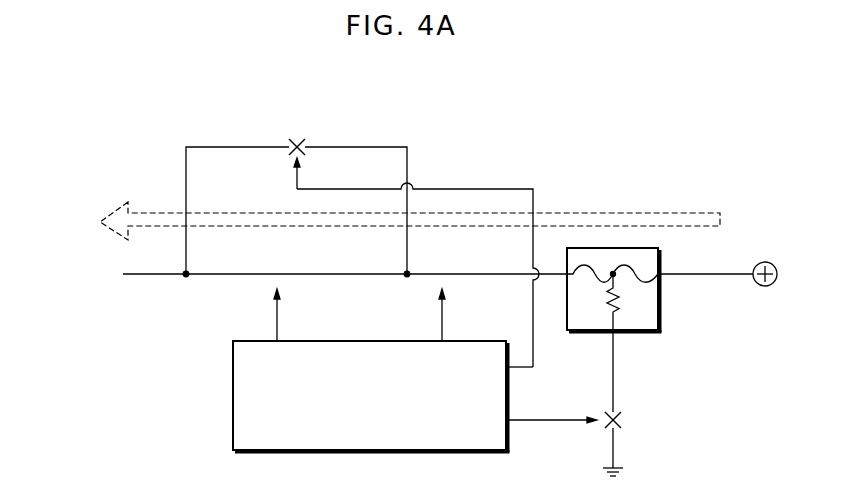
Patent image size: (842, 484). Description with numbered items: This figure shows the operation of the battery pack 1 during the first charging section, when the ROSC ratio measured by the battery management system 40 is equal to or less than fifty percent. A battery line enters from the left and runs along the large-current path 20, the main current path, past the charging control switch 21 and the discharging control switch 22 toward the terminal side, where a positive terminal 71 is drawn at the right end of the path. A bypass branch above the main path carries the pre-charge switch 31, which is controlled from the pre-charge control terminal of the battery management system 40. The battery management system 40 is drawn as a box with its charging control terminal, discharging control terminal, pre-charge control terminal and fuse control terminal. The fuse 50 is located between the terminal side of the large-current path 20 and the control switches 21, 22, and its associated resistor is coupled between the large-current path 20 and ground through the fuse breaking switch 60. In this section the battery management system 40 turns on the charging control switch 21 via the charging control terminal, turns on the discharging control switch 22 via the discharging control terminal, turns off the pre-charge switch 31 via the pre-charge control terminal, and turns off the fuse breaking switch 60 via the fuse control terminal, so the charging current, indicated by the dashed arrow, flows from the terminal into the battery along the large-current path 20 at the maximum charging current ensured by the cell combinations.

The battery pack 1 is at (687, 153).
The large-current path 20 is at (207, 274).
The charging control switch 21 is at (280, 258).
The discharging control switch 22 is at (452, 250).
The pre-charge switch 31 is at (300, 127).
The battery management system 40 is at (465, 339).
The fuse 50 is at (662, 305).
The fuse breaking switch 60 is at (628, 418).
The terminal 71 is at (765, 259).